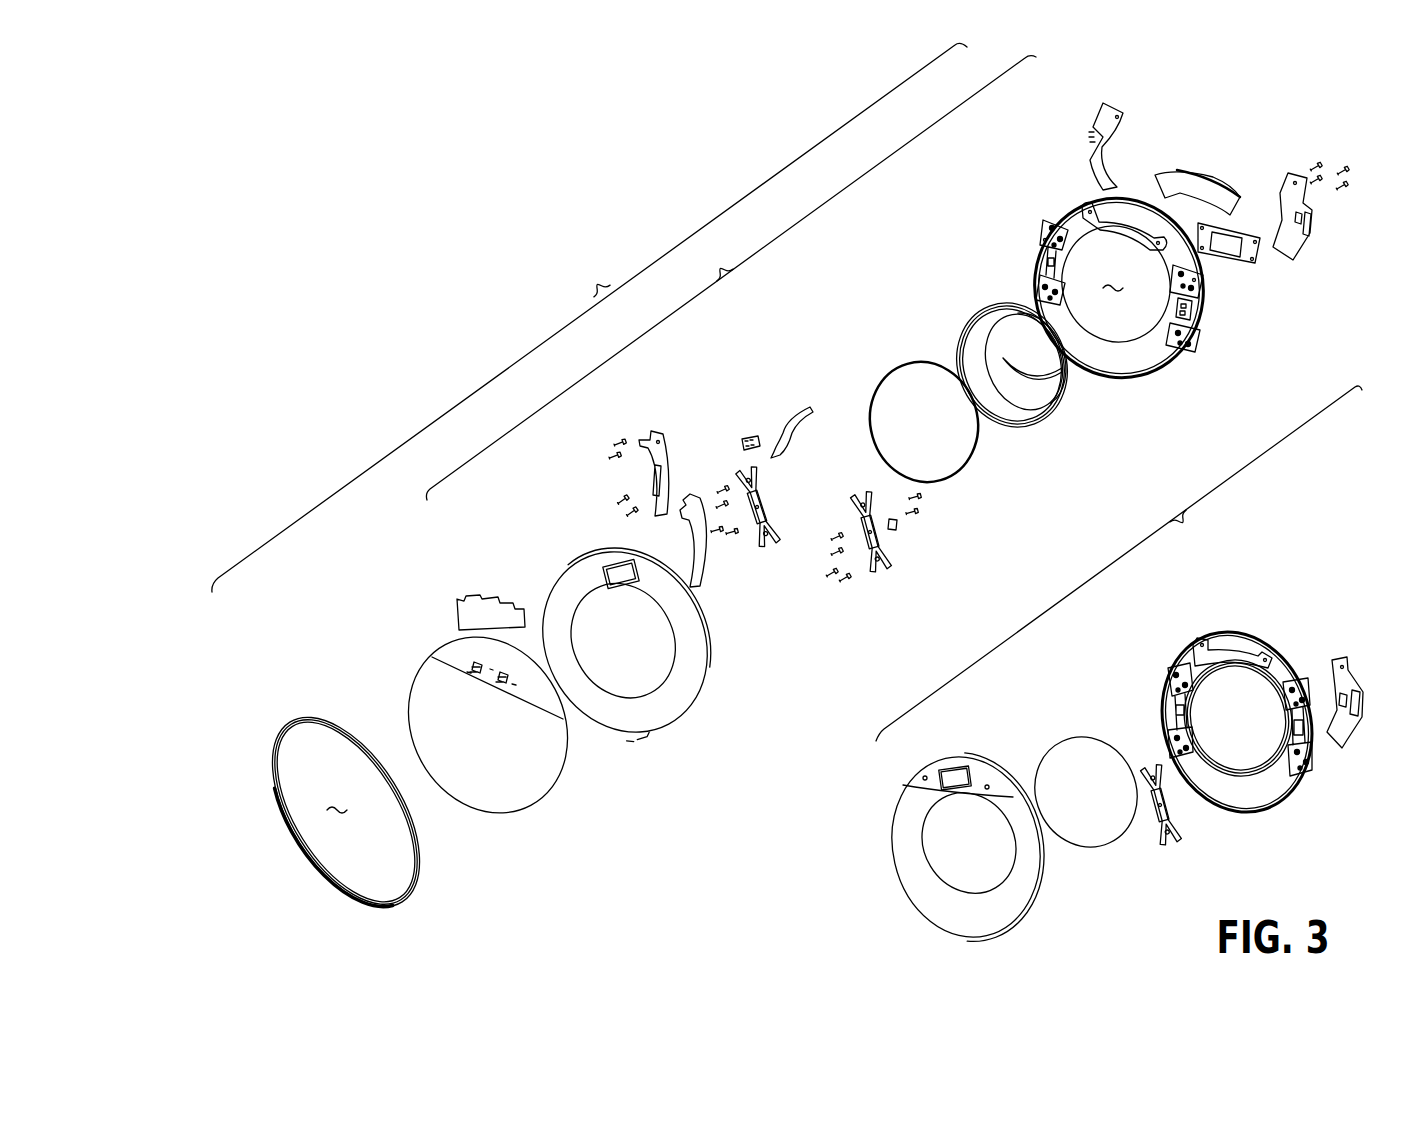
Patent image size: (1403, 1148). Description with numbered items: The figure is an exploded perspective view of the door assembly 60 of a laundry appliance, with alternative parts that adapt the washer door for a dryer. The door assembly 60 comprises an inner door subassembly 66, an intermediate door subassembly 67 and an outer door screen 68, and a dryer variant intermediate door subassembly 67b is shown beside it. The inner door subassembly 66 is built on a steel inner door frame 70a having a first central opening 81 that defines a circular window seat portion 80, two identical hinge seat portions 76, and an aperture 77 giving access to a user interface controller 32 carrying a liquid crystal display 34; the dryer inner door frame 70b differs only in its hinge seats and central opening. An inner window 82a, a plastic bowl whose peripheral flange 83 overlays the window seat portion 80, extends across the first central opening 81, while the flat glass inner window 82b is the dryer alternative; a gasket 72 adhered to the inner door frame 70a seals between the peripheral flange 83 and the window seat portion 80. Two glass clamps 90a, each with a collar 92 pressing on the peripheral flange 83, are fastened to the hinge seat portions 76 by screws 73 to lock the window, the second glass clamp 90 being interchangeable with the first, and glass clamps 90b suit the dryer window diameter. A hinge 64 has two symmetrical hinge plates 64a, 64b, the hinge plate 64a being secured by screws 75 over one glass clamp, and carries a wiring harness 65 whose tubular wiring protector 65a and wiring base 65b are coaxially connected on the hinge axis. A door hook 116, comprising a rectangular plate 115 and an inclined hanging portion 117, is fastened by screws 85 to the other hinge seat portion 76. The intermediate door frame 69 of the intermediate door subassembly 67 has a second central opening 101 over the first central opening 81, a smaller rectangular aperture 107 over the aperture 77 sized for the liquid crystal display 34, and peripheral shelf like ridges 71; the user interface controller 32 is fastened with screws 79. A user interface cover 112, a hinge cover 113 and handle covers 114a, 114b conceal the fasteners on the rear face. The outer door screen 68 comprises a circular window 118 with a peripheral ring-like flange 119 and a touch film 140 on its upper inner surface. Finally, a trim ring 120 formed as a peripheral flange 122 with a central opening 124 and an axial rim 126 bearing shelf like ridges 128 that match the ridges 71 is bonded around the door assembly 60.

The user interface controller 32 is at (1263, 273).
The liquid crystal display 34 is at (1235, 258).
The door assembly 60 is at (589, 317).
The hinge 64 is at (644, 506).
The hinge plate 64a is at (705, 540).
The hinge plate 64b is at (650, 440).
The wiring harness 65 is at (747, 395).
The tubular wiring protector 65a is at (805, 412).
The wiring base 65b is at (745, 440).
The inner door subassembly 66 is at (1119, 563).
The intermediate door subassembly 67 is at (708, 772).
The intermediate door subassembly 67b is at (1030, 850).
The outer door screen 68 is at (489, 736).
The intermediate door frame 69 is at (563, 605).
The inner door frame 70a is at (1130, 310).
The inner door frame 70b is at (1268, 808).
The peripheral shelf like ridges 71 is at (643, 733).
The gasket 72 is at (985, 460).
The screws 73 is at (716, 505).
The screws 75 is at (608, 456).
The hinge seat portions 76 is at (1050, 240).
The aperture 77 is at (1088, 216).
The screws 79 is at (1346, 165).
The circular window seat portion 80 is at (1130, 310).
The first central opening 81 is at (1133, 345).
The inner window 82a is at (1069, 385).
The inner window 82b is at (1128, 835).
The peripheral flange 83 is at (1050, 422).
The screws 85 is at (920, 511).
The glass clamp 90 is at (883, 543).
The glass clamps 90a is at (746, 480).
The glass clamps 90b is at (1170, 825).
The collar 92 is at (855, 546).
The second central opening 101 is at (673, 660).
The smaller rectangular aperture 107 is at (607, 573).
The user interface cover 112 is at (1200, 176).
The hinge cover 113 is at (1095, 118).
The handle cover 114a is at (1290, 172).
The handle cover 114b is at (1344, 752).
The rectangular plate 115 is at (942, 537).
The door hook 116 is at (966, 559).
The hanging portion 117 is at (898, 524).
The circular window 118 is at (510, 800).
The peripheral ring-like flange 119 is at (568, 790).
The trim ring 120 is at (326, 821).
The peripheral flange 122 is at (275, 772).
The central opening 124 is at (337, 800).
The rim 126 is at (325, 720).
The shelf like ridges 128 is at (295, 868).
The touch film 140 is at (460, 603).